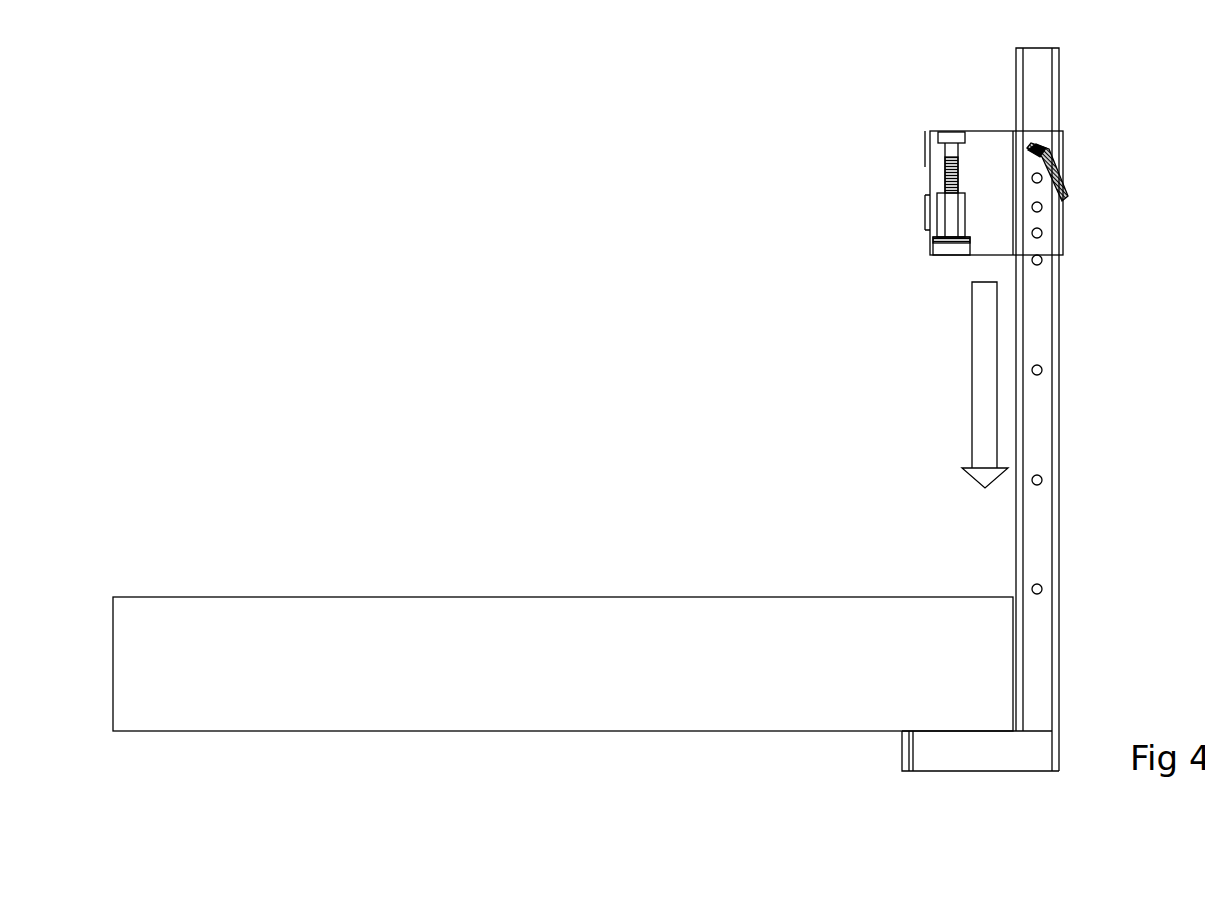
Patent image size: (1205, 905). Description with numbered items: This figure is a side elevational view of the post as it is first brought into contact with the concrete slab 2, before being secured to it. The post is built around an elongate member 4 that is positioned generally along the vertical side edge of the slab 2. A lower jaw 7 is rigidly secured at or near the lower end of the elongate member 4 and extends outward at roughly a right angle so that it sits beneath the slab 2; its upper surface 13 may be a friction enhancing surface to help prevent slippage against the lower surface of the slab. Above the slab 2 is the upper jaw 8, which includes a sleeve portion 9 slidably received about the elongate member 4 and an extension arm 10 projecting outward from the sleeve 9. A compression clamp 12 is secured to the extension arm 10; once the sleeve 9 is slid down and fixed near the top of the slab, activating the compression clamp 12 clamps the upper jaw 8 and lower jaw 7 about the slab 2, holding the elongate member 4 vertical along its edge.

The concrete slab 2 is at (718, 627).
The elongate member 4 is at (1042, 410).
The lower jaw 7 is at (945, 757).
The upper jaw 8 is at (994, 180).
The sleeve portion 9 is at (1050, 222).
The extension arm 10 is at (979, 145).
The compression clamp 12 is at (935, 228).
The upper surface of lower jaw 13 is at (925, 735).